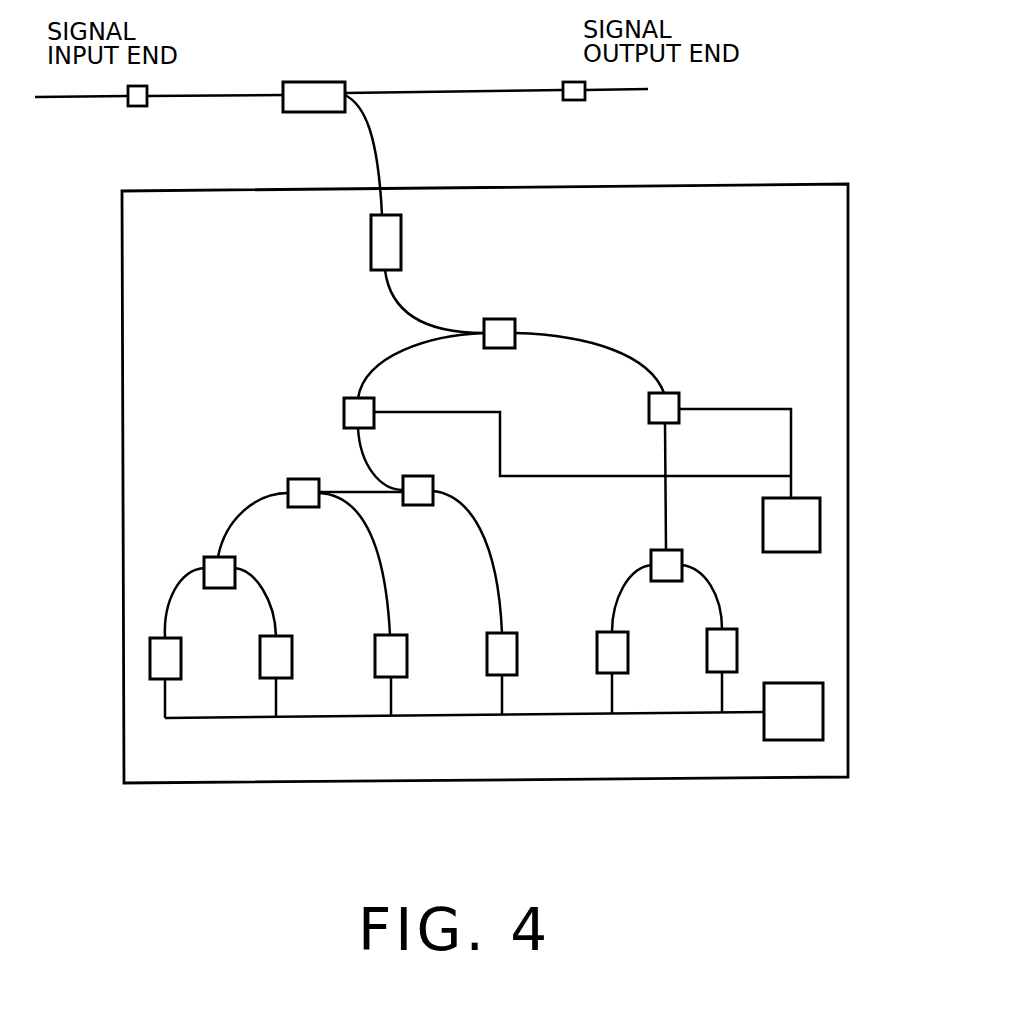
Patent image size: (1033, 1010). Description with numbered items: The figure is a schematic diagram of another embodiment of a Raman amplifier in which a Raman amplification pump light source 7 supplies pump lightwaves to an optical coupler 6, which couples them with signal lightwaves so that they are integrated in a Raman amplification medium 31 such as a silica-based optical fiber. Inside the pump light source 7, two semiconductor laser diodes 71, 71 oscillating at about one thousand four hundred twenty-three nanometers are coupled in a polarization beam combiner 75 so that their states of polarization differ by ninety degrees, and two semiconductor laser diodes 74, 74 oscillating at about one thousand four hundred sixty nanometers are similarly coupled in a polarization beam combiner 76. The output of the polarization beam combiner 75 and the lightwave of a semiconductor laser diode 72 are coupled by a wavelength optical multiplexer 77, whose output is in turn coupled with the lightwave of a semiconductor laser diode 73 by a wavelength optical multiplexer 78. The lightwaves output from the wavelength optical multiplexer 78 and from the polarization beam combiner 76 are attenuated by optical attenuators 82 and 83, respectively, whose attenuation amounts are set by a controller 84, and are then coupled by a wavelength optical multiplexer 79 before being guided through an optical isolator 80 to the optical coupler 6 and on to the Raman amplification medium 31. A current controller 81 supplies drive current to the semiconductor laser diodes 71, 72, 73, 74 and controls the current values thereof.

The Raman amplification medium 31 is at (341, 106).
The optical coupler 6 is at (314, 114).
The Raman amplification pump light source 7 is at (485, 439).
The optical isolator 80 is at (427, 274).
The wavelength optical multiplexer 79 is at (511, 358).
The optical attenuator 82 is at (544, 443).
The optical attenuator 83 is at (693, 471).
The controller 84 is at (791, 542).
The wavelength optical multiplexer 77 is at (310, 557).
The wavelength optical multiplexer 78 is at (451, 554).
The polarization beam combiner 75 is at (220, 597).
The polarization beam combiner 76 is at (667, 591).
The semiconductor laser diode 71 is at (243, 677).
The semiconductor laser diode 72 is at (413, 675).
The semiconductor laser diode 73 is at (523, 674).
The semiconductor laser diode 74 is at (688, 671).
The current controller 81 is at (494, 728).